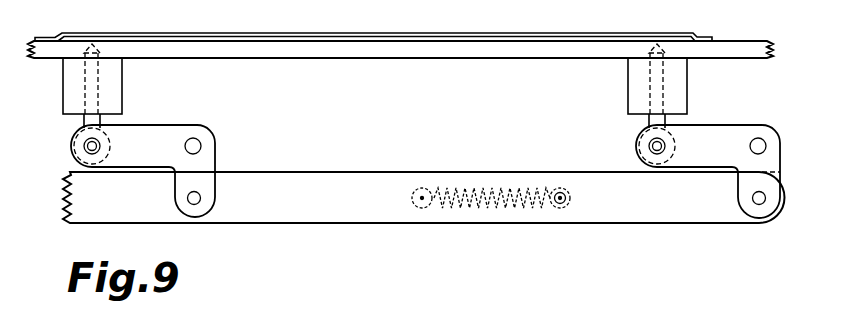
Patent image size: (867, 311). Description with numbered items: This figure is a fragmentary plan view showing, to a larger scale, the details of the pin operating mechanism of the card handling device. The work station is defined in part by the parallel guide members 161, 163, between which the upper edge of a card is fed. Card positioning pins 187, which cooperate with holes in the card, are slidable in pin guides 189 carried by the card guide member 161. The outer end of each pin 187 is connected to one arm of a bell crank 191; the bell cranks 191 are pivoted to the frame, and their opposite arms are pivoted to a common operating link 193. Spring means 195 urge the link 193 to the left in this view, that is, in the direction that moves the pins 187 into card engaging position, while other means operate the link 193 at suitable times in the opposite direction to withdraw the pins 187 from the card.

The guide member 161 is at (325, 57).
The guide member 163 is at (195, 35).
The card positioning pin 187 is at (93, 123).
The pin guide 189 is at (115, 77).
The bell crank 191 is at (210, 160).
The operating link 193 is at (328, 212).
The spring means 195 is at (497, 208).